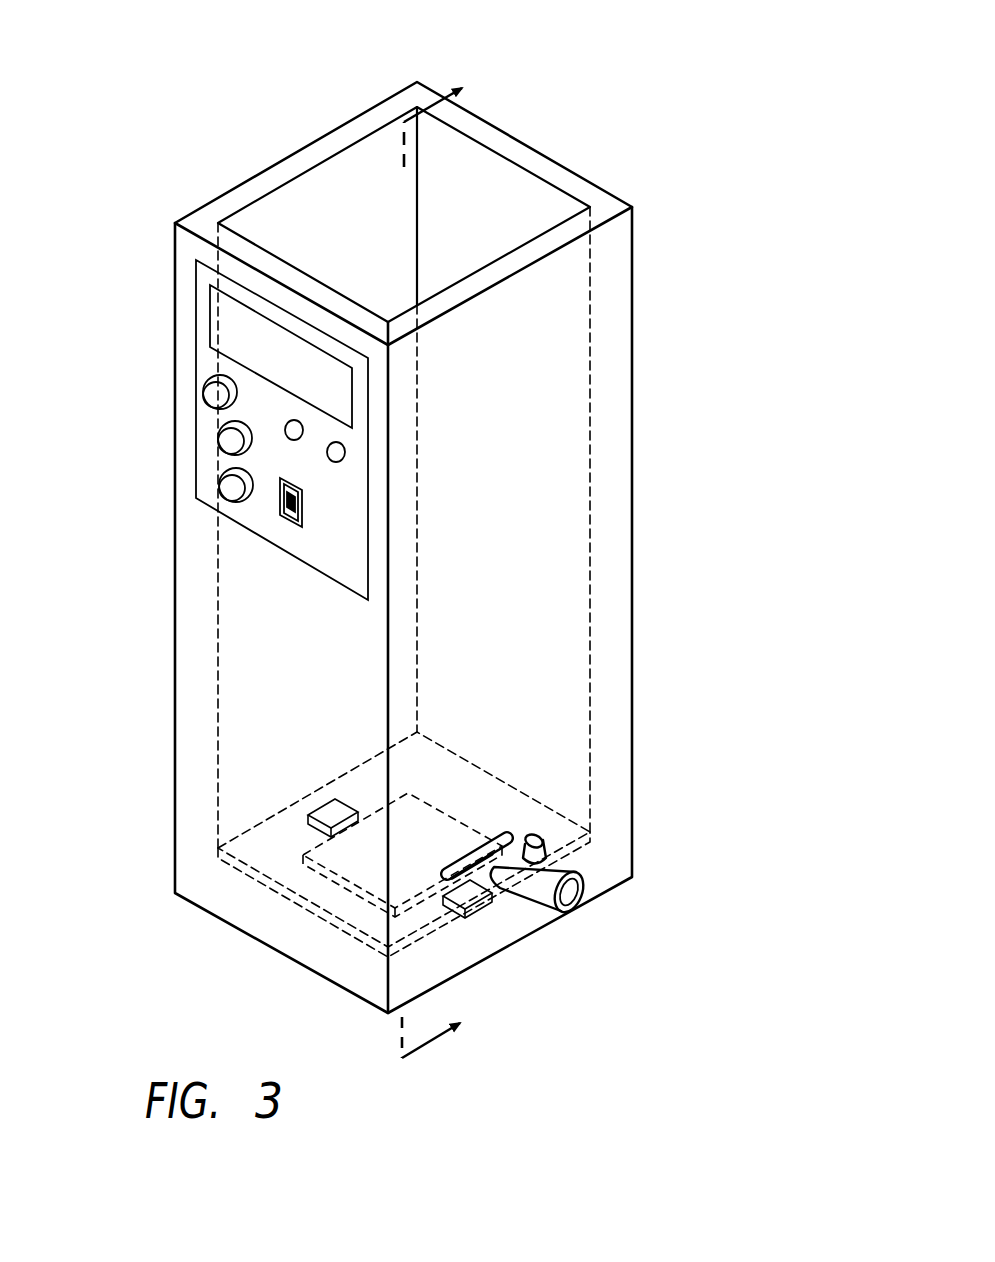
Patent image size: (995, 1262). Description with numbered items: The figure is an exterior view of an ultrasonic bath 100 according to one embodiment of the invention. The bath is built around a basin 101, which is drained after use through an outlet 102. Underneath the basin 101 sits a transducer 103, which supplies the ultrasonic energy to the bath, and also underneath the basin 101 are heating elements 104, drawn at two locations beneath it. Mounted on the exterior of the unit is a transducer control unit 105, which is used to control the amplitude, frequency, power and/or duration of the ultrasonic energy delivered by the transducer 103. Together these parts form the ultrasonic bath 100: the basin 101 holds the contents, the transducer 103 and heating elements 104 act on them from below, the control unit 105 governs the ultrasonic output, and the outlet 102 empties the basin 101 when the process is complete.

The ultrasonic bath 100 is at (405, 536).
The basin 101 is at (632, 541).
The outlet 102 is at (568, 892).
The transducer 103 is at (362, 866).
The heating elements 104 is at (313, 812).
The transducer control unit 105 is at (203, 425).